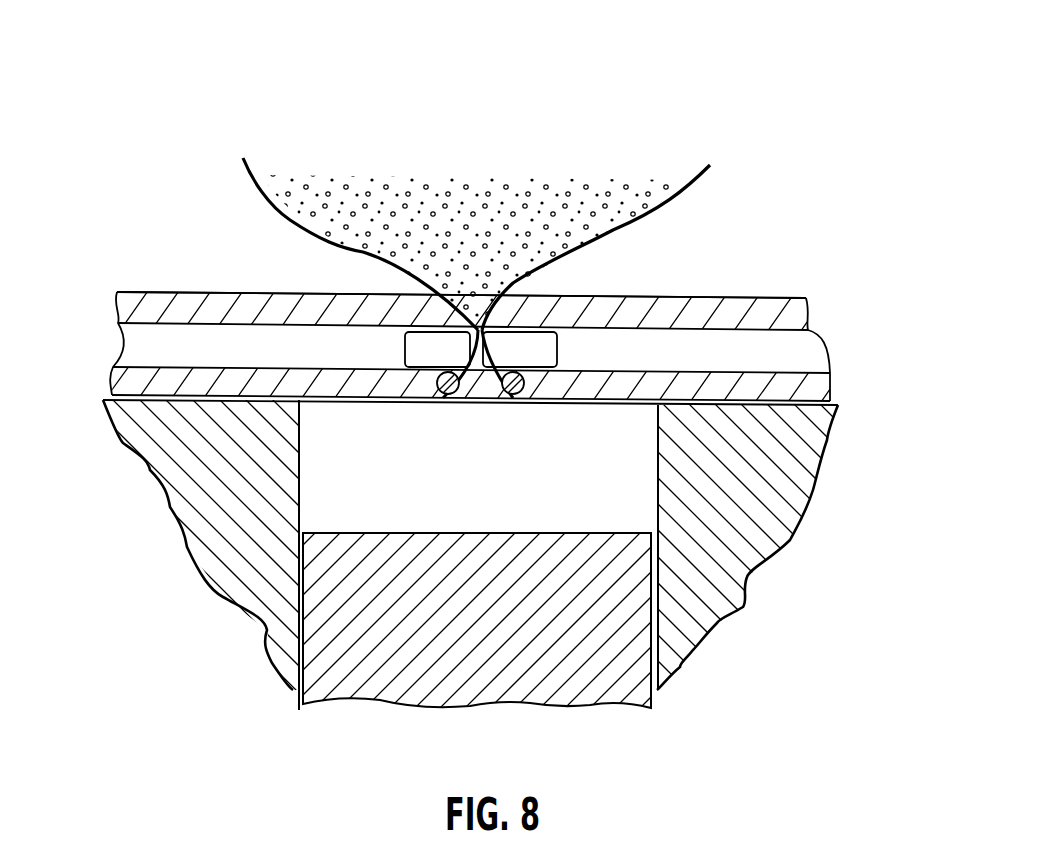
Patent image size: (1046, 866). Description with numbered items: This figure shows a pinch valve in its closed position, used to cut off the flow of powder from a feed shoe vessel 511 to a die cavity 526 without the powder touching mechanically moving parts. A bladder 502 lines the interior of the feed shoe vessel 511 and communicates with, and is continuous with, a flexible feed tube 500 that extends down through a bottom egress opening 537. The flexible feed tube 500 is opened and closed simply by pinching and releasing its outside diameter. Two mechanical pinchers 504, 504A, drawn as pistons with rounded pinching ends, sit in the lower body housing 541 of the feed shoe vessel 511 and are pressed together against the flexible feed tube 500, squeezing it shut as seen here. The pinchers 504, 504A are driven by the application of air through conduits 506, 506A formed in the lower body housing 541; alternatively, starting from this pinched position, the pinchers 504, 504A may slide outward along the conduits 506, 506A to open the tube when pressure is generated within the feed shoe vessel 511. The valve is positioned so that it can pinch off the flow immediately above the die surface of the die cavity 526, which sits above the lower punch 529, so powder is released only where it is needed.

The flexible feed tube 500 is at (457, 352).
The bladder 502 is at (657, 212).
The mechanical pincher 504 is at (413, 348).
The mechanical pincher 504A is at (556, 346).
The conduit 506 is at (140, 350).
The conduit 506A is at (802, 354).
The feed shoe vessel 511 is at (802, 308).
The die cavity 526 is at (327, 497).
The lower punch 529 is at (586, 693).
The bottom egress opening 537 is at (470, 322).
The lower body housing 541 is at (661, 291).